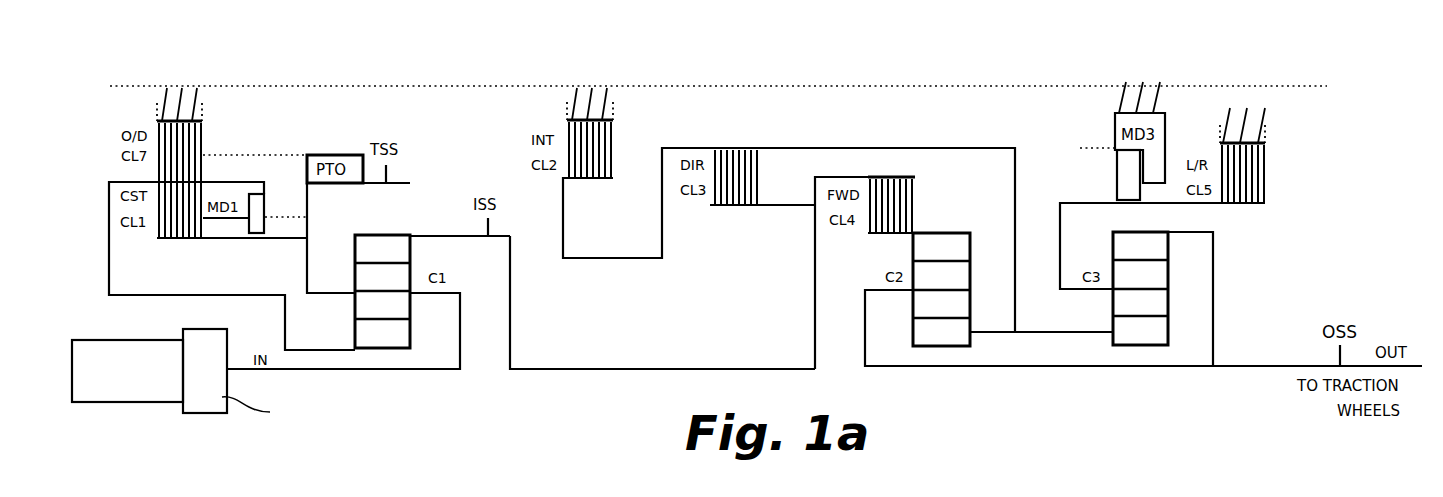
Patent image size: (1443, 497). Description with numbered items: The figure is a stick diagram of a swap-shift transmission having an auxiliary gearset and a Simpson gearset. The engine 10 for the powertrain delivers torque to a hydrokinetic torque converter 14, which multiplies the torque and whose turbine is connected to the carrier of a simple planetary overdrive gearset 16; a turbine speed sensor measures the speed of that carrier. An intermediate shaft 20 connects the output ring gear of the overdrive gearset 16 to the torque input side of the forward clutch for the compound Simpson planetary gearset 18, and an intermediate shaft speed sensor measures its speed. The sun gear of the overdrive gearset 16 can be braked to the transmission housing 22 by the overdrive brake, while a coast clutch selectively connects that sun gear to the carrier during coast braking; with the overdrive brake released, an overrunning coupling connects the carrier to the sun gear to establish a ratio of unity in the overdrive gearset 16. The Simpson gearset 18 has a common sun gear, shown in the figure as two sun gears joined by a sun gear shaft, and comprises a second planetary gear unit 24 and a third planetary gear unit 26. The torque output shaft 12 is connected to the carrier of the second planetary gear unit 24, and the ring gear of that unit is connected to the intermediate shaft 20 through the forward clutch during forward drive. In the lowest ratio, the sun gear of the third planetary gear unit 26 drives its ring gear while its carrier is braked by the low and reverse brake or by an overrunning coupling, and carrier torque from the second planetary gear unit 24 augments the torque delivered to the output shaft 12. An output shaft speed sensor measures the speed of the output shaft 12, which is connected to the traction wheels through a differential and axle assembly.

The engine 10 is at (130, 402).
The torque output shaft 12 is at (1238, 366).
The hydrokinetic torque converter 14 is at (200, 413).
The simple planetary overdrive gearset 16 is at (395, 356).
The compound Simpson planetary gearset 18 is at (1044, 340).
The intermediate shaft 20 is at (634, 369).
The transmission housing 22 is at (195, 102).
The second planetary gear unit 24 is at (937, 226).
The third planetary gear unit 26 is at (1115, 232).